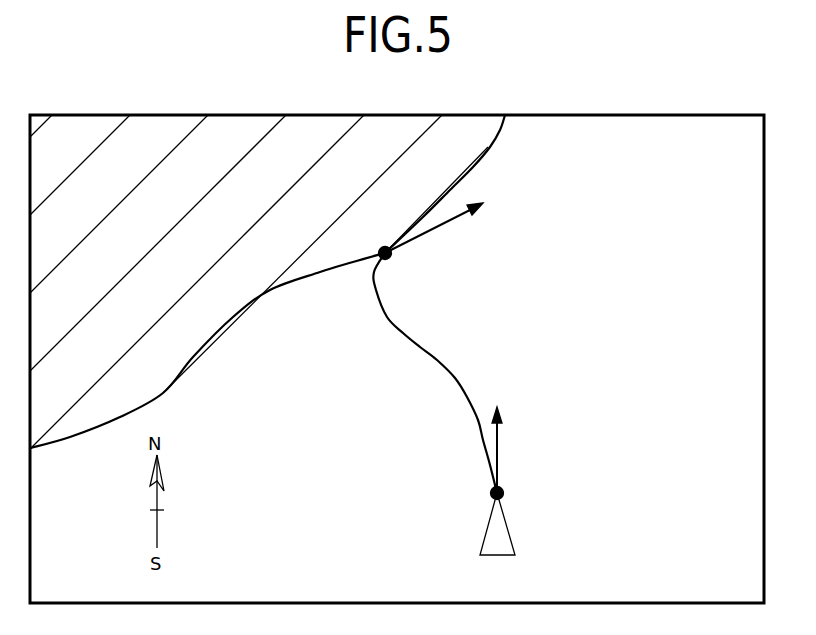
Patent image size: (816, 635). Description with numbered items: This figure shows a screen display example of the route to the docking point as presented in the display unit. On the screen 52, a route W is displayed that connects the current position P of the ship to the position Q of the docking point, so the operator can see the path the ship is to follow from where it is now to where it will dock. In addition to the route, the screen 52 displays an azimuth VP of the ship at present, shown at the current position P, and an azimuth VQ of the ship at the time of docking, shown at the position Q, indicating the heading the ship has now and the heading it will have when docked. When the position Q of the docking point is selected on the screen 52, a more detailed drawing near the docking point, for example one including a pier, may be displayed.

The screen 52 is at (703, 115).
The route W is at (437, 360).
The current position P is at (487, 518).
The position of the docking point Q is at (378, 238).
The azimuth of the ship at present VP is at (513, 450).
The azimuth of the ship at the time of docking VQ is at (452, 223).